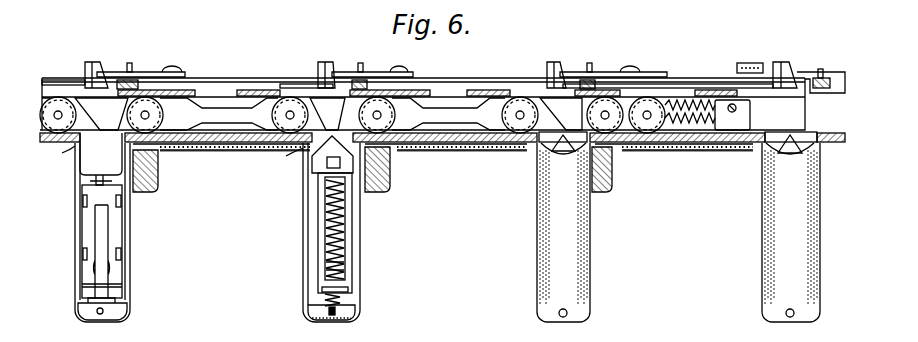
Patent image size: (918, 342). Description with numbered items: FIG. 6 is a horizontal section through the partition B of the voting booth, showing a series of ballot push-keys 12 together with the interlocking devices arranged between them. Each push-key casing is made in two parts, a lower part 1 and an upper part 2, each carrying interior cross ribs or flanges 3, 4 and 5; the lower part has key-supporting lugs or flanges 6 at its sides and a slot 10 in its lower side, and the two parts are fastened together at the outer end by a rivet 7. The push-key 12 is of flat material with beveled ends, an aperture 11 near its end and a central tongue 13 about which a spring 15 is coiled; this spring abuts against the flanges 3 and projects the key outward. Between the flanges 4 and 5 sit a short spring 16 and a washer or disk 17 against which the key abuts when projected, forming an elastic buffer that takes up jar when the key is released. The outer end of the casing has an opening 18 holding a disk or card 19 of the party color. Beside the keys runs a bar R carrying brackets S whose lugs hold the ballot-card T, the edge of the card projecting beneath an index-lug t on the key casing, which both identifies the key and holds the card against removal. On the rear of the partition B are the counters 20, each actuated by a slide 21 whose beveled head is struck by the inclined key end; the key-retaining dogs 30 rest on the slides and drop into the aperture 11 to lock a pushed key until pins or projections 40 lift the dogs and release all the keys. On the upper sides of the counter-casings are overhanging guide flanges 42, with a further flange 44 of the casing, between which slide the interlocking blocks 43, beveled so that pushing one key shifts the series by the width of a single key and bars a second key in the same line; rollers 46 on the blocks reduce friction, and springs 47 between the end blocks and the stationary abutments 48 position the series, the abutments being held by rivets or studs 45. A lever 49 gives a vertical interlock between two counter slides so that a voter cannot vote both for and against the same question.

The lower casing part 1 is at (130, 245).
The upper casing part 2 is at (586, 258).
The cross rib or flange 3 is at (88, 181).
The cross rib or flange 4 is at (82, 285).
The cross rib or flange 5 is at (80, 304).
The key-supporting lug 6 is at (121, 207).
The rivet 7 is at (357, 312).
The slot 10 is at (98, 227).
The aperture 11 is at (327, 163).
The push-key 12 is at (350, 238).
The central tongue 13 is at (330, 217).
The spring 15 is at (342, 270).
The short spring 16 is at (323, 302).
The washer or disk 17 is at (354, 293).
The opening 18 is at (320, 319).
The disk or card 19 is at (334, 316).
The counter 20 is at (258, 80).
The slide 21 is at (94, 70).
The key-retaining dog 30 is at (150, 76).
The pin or projection 40 is at (133, 79).
The guide flange 42 is at (195, 91).
The sliding block 43 is at (213, 113).
The hatched strip 44 is at (332, 73).
The screw 45 is at (737, 108).
The roller 46 is at (290, 102).
The spring 47 is at (688, 106).
The stationary abutment 48 is at (745, 121).
The lever 49 is at (760, 63).
The partition B is at (833, 143).
The bar R is at (159, 190).
The bracket S is at (232, 150).
The ballot-card T is at (197, 152).
The index-lug t is at (179, 157).